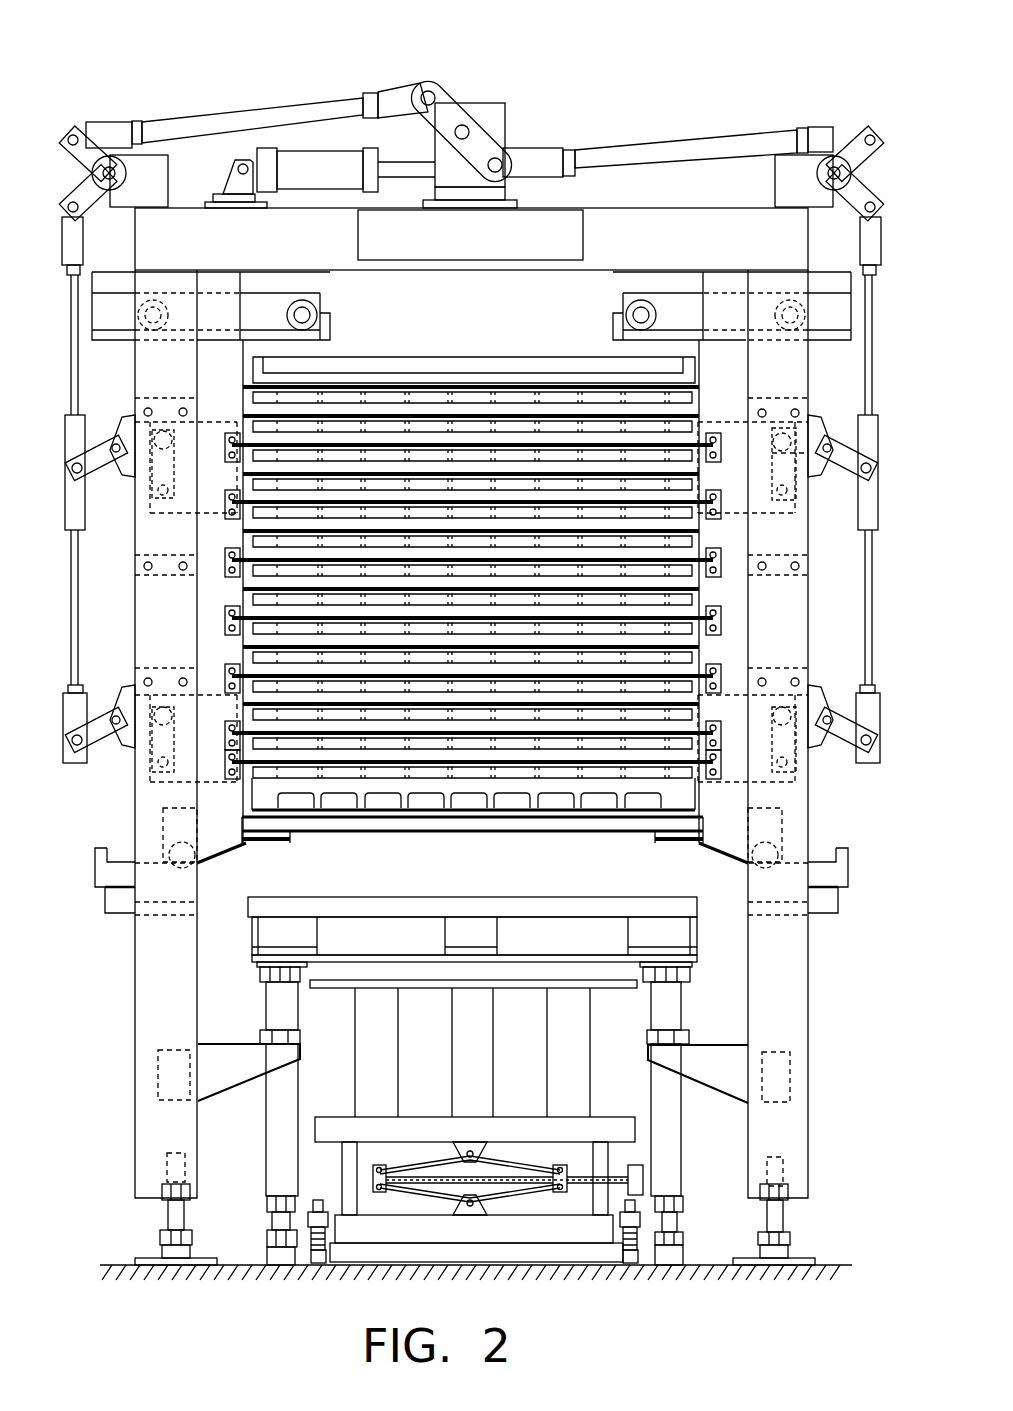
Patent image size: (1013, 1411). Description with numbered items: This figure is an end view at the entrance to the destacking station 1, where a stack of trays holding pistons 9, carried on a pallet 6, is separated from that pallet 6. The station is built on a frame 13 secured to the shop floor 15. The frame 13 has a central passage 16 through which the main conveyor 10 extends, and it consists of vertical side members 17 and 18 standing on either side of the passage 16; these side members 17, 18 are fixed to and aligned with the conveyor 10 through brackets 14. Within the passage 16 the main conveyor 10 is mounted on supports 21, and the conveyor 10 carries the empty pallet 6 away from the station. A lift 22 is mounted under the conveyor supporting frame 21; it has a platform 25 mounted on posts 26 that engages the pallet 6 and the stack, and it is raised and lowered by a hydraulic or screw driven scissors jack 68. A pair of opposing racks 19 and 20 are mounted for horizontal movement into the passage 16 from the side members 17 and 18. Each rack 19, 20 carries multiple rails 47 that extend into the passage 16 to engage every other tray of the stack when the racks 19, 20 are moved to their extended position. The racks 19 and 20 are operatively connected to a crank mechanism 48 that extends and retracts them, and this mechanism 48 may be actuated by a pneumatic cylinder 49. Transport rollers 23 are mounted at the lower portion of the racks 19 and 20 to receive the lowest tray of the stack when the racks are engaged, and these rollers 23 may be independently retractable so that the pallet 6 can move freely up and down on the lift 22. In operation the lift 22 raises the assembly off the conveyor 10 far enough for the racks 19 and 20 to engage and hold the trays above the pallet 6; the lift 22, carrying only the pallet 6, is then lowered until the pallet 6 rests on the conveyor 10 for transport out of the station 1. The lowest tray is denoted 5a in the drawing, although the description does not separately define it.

The destacking station 1 is at (118, 73).
The pneumatic cylinder 49 is at (312, 163).
The crank mechanism 48 is at (452, 120).
The frame 13 is at (703, 225).
The rack 20 is at (210, 370).
The rack 19 is at (735, 372).
The rails 47 is at (225, 565).
The vertical side member 18 is at (140, 605).
The vertical side member 17 is at (800, 637).
The pistons 9 is at (280, 795).
The lowermost platen 5a is at (700, 818).
The transport rollers 23 is at (285, 840).
The pallet 6 is at (340, 897).
The central passage 16 is at (612, 884).
The main conveyor 10 is at (262, 975).
The brackets 14 is at (232, 1050).
The platform 25 is at (430, 985).
The posts 26 is at (550, 1010).
The lift 22 is at (445, 1128).
The supports 21 is at (678, 1147).
The scissors jack 68 is at (393, 1203).
The shop floor 15 is at (822, 1262).